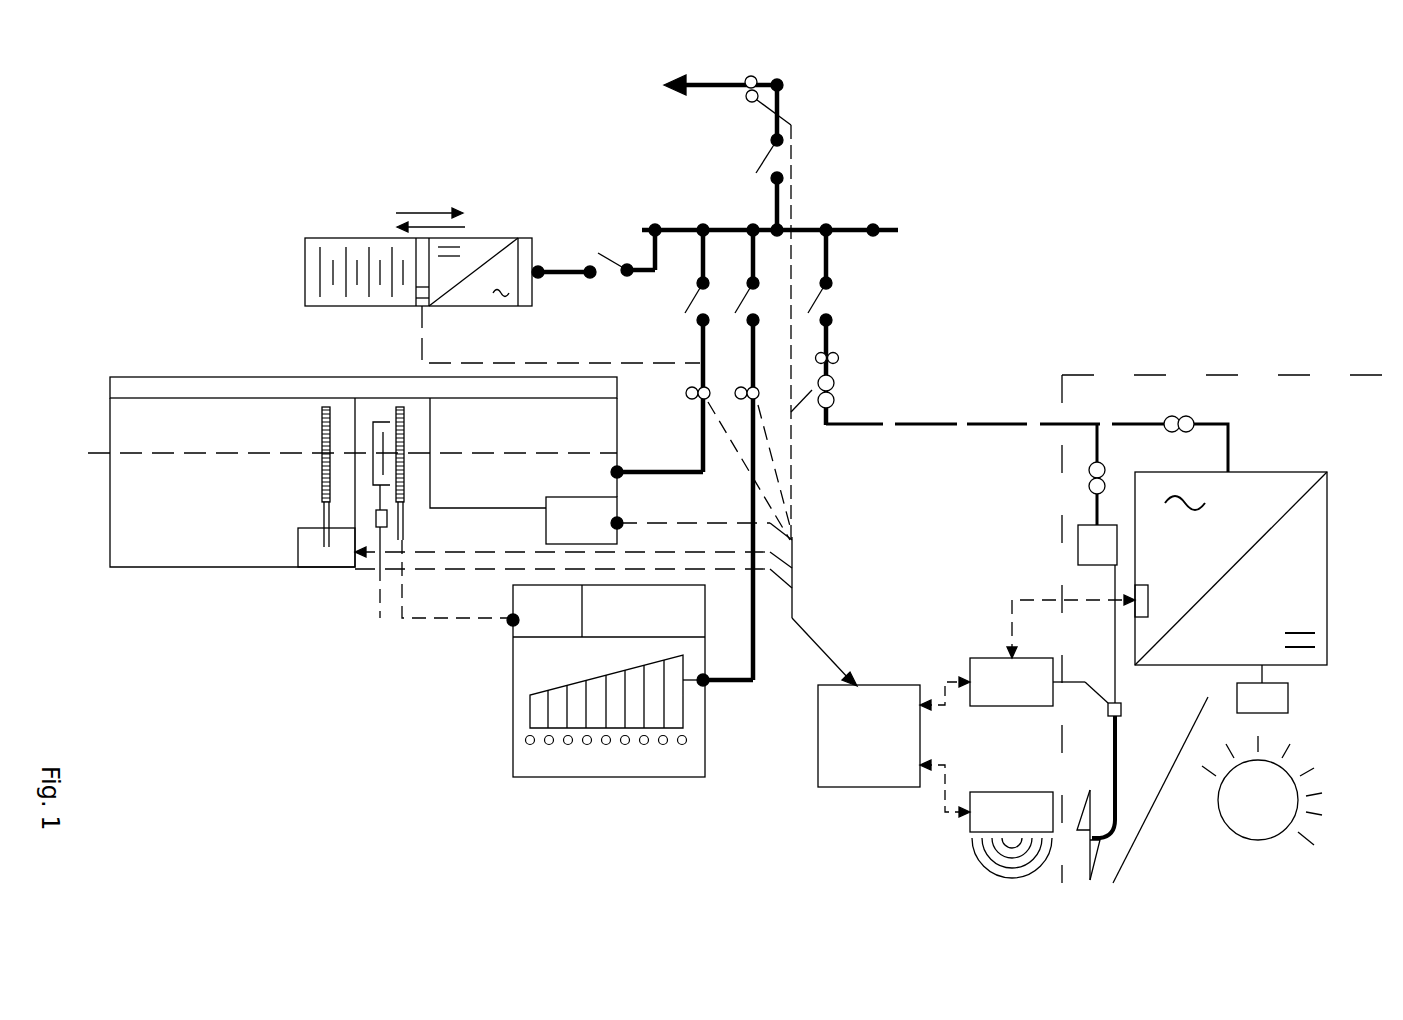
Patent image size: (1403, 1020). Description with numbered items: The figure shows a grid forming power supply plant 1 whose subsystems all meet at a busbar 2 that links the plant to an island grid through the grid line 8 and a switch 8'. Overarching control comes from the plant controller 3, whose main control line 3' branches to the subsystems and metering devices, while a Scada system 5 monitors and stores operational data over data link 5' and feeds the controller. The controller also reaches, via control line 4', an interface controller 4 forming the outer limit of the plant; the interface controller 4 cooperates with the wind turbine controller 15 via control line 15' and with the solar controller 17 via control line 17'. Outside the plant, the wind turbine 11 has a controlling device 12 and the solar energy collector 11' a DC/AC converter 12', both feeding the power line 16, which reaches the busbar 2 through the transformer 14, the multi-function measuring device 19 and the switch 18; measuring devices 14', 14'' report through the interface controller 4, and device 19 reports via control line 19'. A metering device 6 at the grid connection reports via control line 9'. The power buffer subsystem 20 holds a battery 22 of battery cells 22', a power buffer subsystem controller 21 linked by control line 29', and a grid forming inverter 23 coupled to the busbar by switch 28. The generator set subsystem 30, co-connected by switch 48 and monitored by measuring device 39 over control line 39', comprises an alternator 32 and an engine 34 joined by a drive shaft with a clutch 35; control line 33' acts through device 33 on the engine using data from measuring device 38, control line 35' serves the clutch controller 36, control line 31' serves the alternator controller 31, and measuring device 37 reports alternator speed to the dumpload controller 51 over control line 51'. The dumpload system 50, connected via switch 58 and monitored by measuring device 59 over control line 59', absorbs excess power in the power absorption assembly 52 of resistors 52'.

The plant 1 is at (325, 812).
The busbar 2 is at (858, 225).
The plant controller 3 is at (869, 769).
The main control line 3' is at (819, 611).
The interface controller 4 is at (1011, 682).
The control line 4' is at (944, 674).
The Scada system 5 is at (1011, 835).
The data connection 5' is at (936, 803).
The grid meter 6 is at (752, 74).
The grid line 8 is at (723, 128).
The switch 8' is at (740, 153).
The control line 9' is at (790, 320).
The wind turbine 11 is at (1217, 790).
The solar energy collector 11' is at (1297, 692).
The controlling device 12 is at (1097, 614).
The DC/AC converter 12' is at (1269, 568).
The transformer 14 is at (872, 382).
The measuring device 14' is at (1204, 406).
The measuring device 14'' is at (1071, 474).
The wind turbine controller 15 is at (1092, 798).
The control line 15' is at (1066, 716).
The power line 16 is at (930, 432).
The solar controller 17 is at (1156, 644).
The control line 17' is at (1053, 614).
The switch 18 is at (822, 324).
The multi-function measuring device 19 is at (850, 372).
The control line 19' is at (820, 432).
The power buffer subsystem 20 is at (266, 259).
The power buffer subsystem controller 21 is at (420, 302).
The battery 22 is at (329, 298).
The battery cells 22' is at (362, 224).
The inverter 23 is at (487, 248).
The switch 28 is at (620, 276).
The control line 29' is at (561, 334).
The generator set subsystem 30 is at (193, 582).
The alternator controller 31 is at (581, 471).
The control line 31' is at (701, 512).
The alternator 32 is at (488, 453).
The device 33 is at (311, 564).
The control line 33' is at (573, 542).
The engine 34 is at (352, 478).
The clutch 35 is at (365, 537).
The control line 35' is at (573, 586).
The clutch controller 36 is at (380, 530).
The measuring device 37 is at (403, 530).
The measuring device 38 is at (322, 514).
The multi-instrument measuring device 39 is at (660, 399).
The control line 39' is at (746, 471).
The switch 48 is at (698, 322).
The dumpload system 50 is at (540, 810).
The dumpload controller 51 is at (561, 611).
The control line 51' is at (485, 651).
The power absorption assembly 52 is at (618, 754).
The resistors 52' is at (580, 663).
The switch 58 is at (748, 322).
The multi-instrument measuring device 59 is at (731, 500).
The control line 59' is at (775, 467).